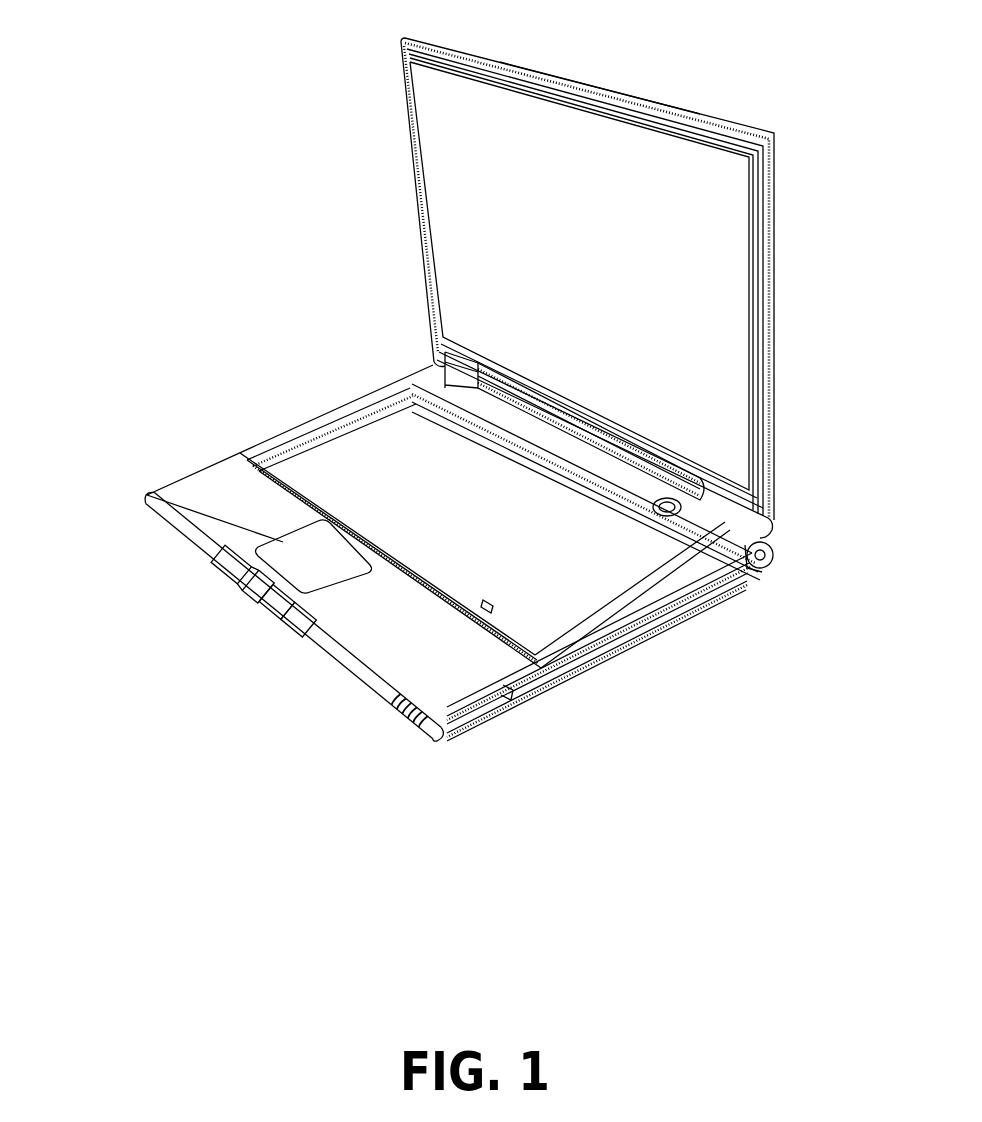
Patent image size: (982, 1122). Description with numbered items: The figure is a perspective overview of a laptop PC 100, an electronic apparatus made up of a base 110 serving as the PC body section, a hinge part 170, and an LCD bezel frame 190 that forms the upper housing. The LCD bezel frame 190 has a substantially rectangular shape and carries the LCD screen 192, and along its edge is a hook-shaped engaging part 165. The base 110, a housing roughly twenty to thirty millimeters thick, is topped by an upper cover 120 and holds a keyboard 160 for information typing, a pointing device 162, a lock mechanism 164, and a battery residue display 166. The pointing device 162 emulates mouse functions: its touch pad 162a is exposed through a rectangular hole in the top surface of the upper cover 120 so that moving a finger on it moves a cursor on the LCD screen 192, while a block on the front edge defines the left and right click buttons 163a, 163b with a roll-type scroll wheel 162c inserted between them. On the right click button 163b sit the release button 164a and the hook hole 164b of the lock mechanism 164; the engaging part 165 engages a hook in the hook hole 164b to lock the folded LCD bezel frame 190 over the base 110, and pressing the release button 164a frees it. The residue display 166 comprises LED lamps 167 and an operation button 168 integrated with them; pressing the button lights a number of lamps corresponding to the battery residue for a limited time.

The laptop PC 100 is at (153, 108).
The base 110 is at (657, 657).
The upper cover 120 is at (210, 485).
The keyboard 160 is at (333, 442).
The pointing device 162 is at (214, 579).
The touch pad 162a is at (187, 503).
The roll-type scroll wheel 162c is at (256, 580).
The left click button 163a is at (227, 557).
The right click button 163b is at (304, 635).
The lock mechanism 164 is at (263, 623).
The release button 164a is at (258, 602).
The hook hole 164b is at (315, 595).
The engaging part 165 is at (610, 108).
The battery residue display 166 is at (410, 732).
The LED lamps 167 is at (393, 710).
The operation button 168 is at (423, 735).
The hinge part 170 is at (781, 561).
The LCD bezel frame 190 is at (790, 316).
The LCD screen 192 is at (462, 222).